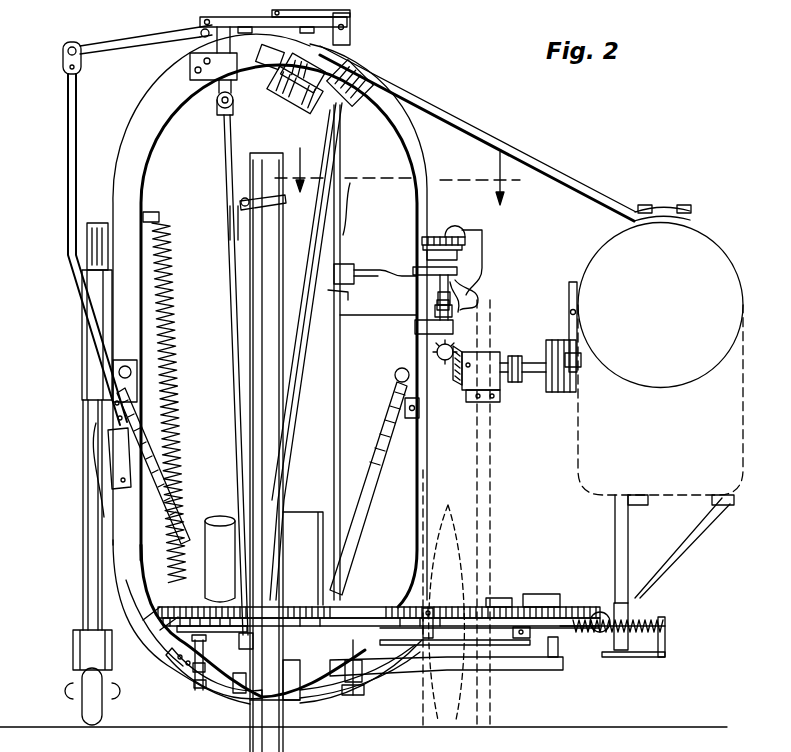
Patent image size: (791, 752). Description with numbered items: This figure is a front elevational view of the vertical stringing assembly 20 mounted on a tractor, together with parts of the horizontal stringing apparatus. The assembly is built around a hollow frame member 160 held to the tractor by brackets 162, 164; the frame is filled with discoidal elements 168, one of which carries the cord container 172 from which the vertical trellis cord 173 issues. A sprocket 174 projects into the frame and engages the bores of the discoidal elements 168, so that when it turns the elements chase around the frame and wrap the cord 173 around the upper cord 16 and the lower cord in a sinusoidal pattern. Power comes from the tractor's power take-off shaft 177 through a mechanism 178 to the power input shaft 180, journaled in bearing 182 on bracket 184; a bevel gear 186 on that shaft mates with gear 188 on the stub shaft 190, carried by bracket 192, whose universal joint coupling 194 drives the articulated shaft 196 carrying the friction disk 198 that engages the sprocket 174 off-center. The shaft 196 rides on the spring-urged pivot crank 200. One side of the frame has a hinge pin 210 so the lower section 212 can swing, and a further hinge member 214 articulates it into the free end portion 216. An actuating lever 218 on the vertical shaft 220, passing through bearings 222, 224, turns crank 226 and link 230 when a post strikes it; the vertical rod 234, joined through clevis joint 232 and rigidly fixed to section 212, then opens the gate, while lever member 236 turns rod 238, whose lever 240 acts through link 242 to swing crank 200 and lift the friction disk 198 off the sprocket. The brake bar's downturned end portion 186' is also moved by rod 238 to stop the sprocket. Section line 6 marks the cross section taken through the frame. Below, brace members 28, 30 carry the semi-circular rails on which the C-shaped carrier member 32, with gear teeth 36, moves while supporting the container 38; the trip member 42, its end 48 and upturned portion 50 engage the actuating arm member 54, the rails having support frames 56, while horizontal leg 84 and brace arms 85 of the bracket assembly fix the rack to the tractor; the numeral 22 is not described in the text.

The section line 6- 6 is at (397, 165).
The horizontal upper cord 16 is at (240, 203).
The vertical stringing assembly 20 is at (428, 379).
The hopper box 22 is at (303, 508).
The brace member 28 is at (378, 440).
The brace member 30 is at (170, 500).
The carrier member 32 is at (162, 592).
The gear teeth members 36 is at (158, 614).
The container 38 is at (212, 512).
The trip member 42 is at (288, 708).
The opposite end of the trip member 48 is at (310, 607).
The upwardly extending end portion 50 is at (338, 600).
The actuating arm member 54 is at (362, 670).
The support frames 56 is at (398, 680).
The horizontal leg 84 is at (615, 603).
The brace arms 85 is at (680, 553).
The hollow frame member 160 is at (414, 132).
The bracket 162 is at (515, 150).
The bracket 164 is at (512, 670).
The discoidal elements 168 is at (345, 70).
The cord container 172 is at (289, 97).
The vertical trellis cord 173 is at (296, 369).
The sprocket 174 is at (472, 260).
The power take-off shaft 177 is at (578, 358).
The coupling mechanism 178 is at (560, 393).
The power input shaft 180 is at (515, 356).
The bearing 182 is at (485, 352).
The bracket 184 is at (470, 402).
The bevel gear 186 is at (447, 380).
The downturned end portion 186' is at (360, 199).
The gear 188 is at (453, 350).
The stub shaft 190 is at (417, 334).
The bracket 192 is at (400, 316).
The universal joint coupling 194 is at (452, 302).
The articulated shaft 196 is at (454, 284).
The friction disk 198 is at (445, 230).
The pivot crank 200 is at (470, 231).
The hinge pin 210 is at (117, 420).
The lower section of the frame 212 is at (283, 410).
The hinge member 214 is at (146, 650).
The free end portion 216 is at (196, 670).
The actuating lever 218 is at (238, 697).
The vertical shaft 220 is at (118, 44).
The bearing member 222 is at (233, 687).
The bearing member 224 is at (226, 70).
The crank 226 is at (200, 30).
The link member 230 is at (237, 17).
The clevis joint 232 is at (63, 48).
The vertical rod 234 is at (68, 162).
The lever member 236 is at (350, 24).
The rod 238 is at (390, 86).
The lever 240 is at (308, 302).
The link 242 is at (378, 268).